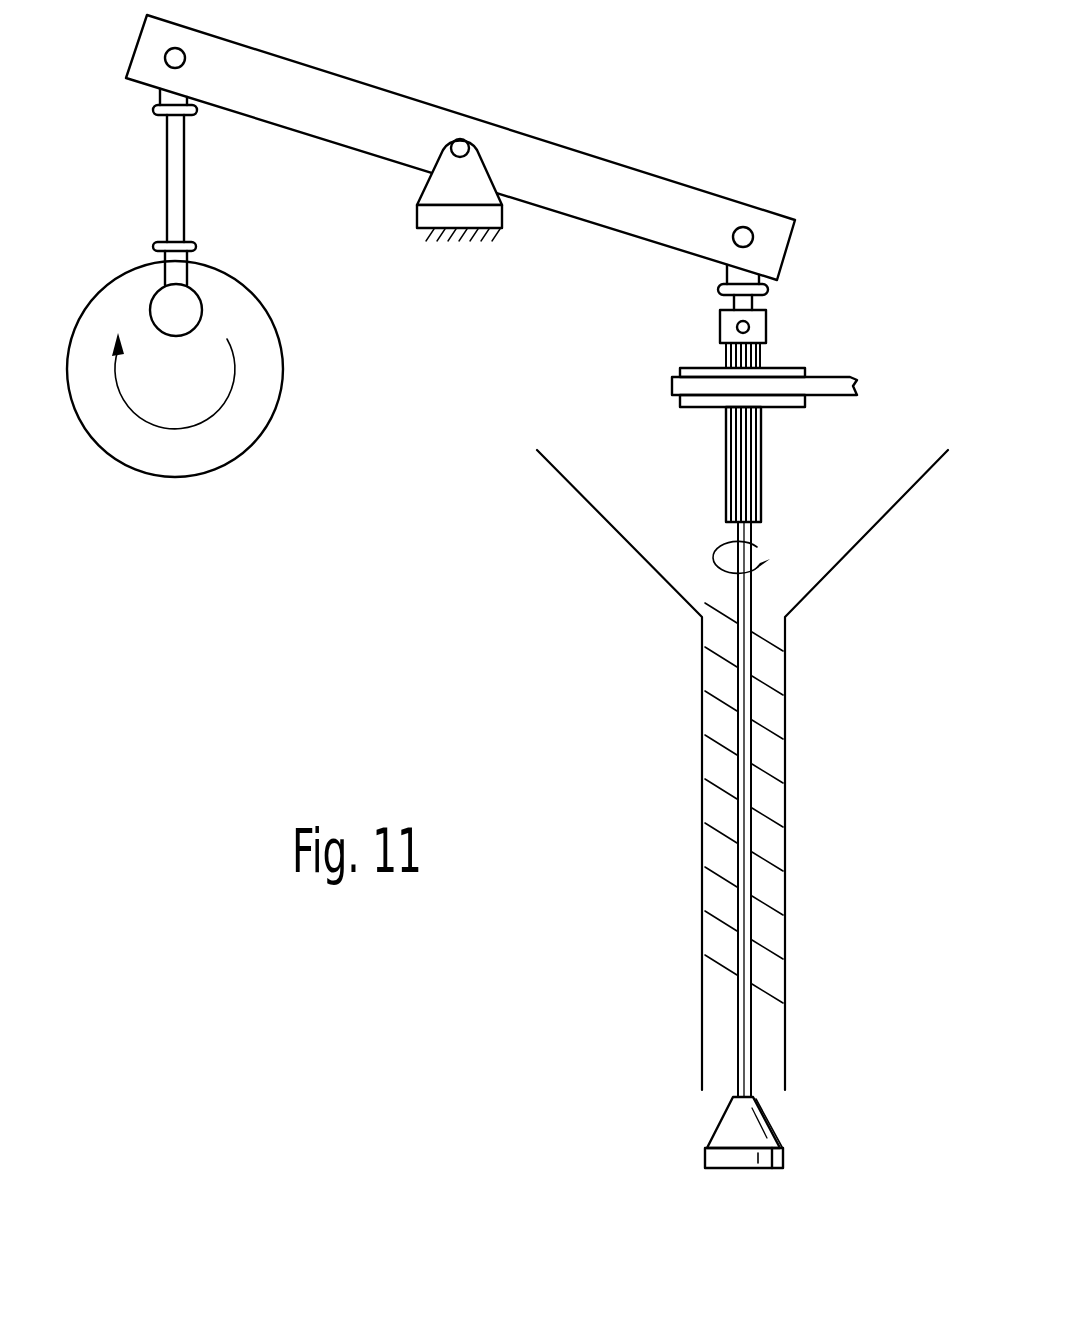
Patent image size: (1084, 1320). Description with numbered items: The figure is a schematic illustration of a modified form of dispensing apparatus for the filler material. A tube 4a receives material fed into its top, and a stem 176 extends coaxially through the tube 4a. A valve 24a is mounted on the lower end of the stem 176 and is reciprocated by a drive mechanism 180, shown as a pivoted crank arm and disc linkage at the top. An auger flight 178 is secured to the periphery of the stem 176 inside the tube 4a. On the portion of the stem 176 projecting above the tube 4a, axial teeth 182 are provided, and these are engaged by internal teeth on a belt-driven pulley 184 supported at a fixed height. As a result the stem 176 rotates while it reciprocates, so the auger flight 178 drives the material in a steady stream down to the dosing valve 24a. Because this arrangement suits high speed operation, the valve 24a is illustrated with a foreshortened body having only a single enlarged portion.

The drive mechanism 180 is at (574, 116).
The belt-driven pulley 184 is at (697, 372).
The axial teeth 182 is at (738, 449).
The auger flight 178 is at (722, 666).
The tube 4a is at (703, 790).
The stem 176 is at (743, 999).
The valve 24a is at (737, 1125).